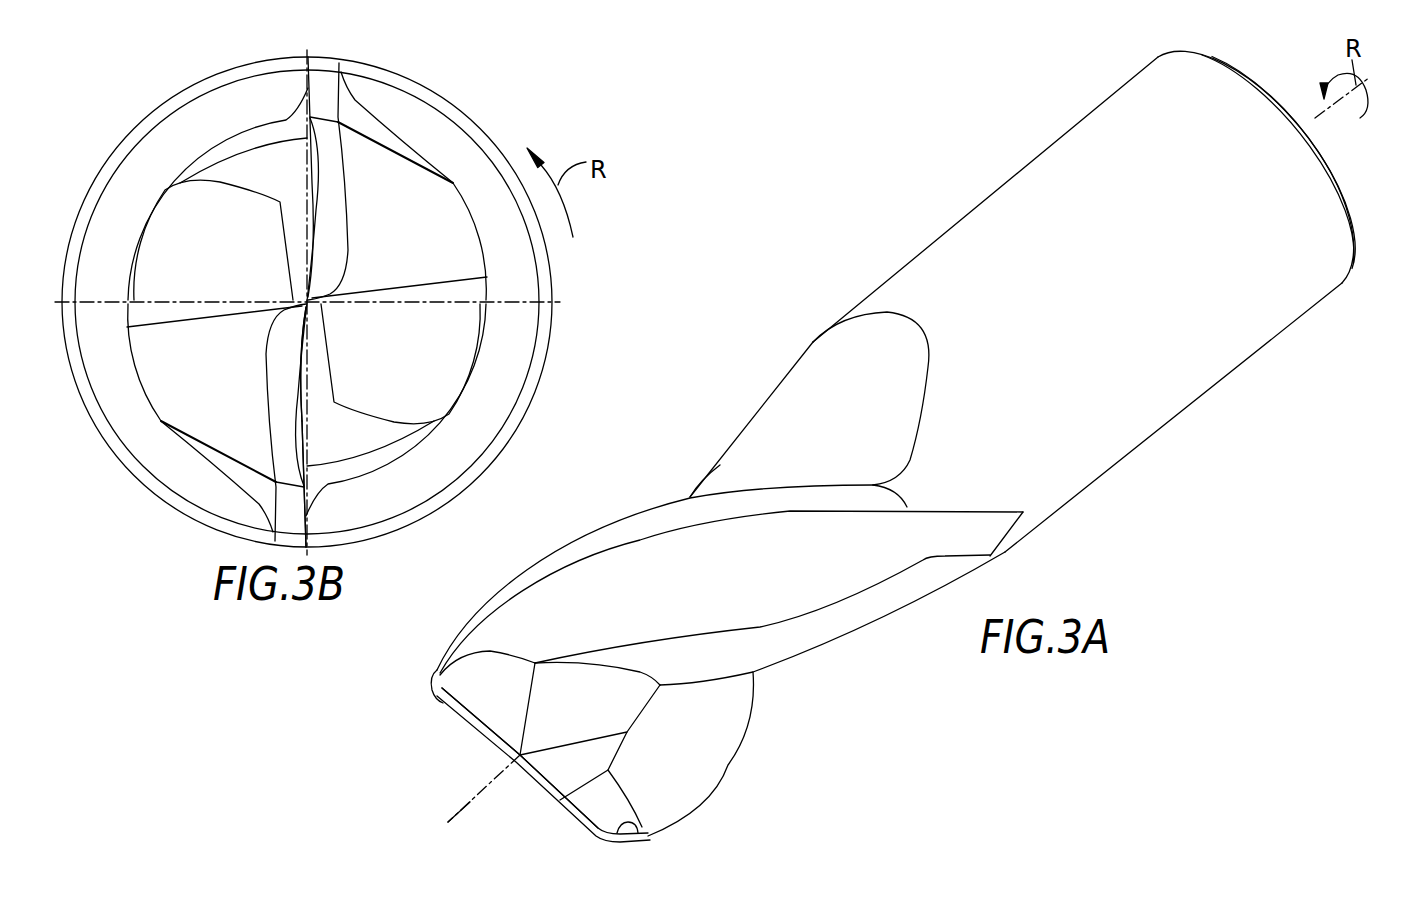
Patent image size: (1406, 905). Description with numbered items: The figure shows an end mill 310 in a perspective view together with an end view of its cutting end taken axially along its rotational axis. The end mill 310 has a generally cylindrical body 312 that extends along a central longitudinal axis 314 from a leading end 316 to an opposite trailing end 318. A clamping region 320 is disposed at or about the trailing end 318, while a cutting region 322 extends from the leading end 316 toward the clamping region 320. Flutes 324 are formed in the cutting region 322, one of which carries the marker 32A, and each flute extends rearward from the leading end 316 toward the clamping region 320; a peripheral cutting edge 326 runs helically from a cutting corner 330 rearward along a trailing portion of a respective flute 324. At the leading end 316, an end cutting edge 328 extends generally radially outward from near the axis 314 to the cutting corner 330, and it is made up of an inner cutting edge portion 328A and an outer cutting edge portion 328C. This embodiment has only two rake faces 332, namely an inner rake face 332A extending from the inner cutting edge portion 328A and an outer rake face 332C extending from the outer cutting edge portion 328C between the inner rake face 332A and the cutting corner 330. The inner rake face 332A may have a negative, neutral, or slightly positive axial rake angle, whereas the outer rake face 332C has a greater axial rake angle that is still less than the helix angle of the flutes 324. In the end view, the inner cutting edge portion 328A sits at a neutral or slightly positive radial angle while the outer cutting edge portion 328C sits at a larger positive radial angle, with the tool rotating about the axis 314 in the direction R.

In FIG. 3B, the end mill 310 is at (113, 89).
In FIG. 3A, the end mill 310 is at (862, 452).
In FIG. 3A, the body 312 is at (1084, 281).
In FIG. 3B, the central longitudinal axis 314 is at (292, 296).
In FIG. 3A, the central longitudinal axis 314 is at (492, 773).
In FIG. 3A, the leading end 316 is at (462, 833).
In FIG. 3A, the trailing end 318 is at (1278, 54).
In FIG. 3A, the clamping region 320 is at (696, 492).
In FIG. 3A, the flute 32A is at (678, 458).
In FIG. 3A, the cutting region 322 is at (656, 739).
In FIG. 3A, the flutes 324 is at (819, 677).
In FIG. 3A, the peripheral cutting edge 326 is at (608, 523).
In FIG. 3B, the end cutting edge 328 is at (316, 284).
In FIG. 3A, the end cutting edge 328 is at (527, 791).
In FIG. 3B, the inner cutting edge portion 328A is at (318, 355).
In FIG. 3A, the inner cutting edge portion 328A is at (537, 782).
In FIG. 3B, the outer cutting edge portion 328C is at (327, 512).
In FIG. 3A, the outer cutting edge portion 328C is at (559, 810).
In FIG. 3A, the cutting corner 330 is at (435, 678).
In FIG. 3A, the rake faces 332 is at (629, 756).
In FIG. 3A, the inner rake face 332A is at (598, 752).
In FIG. 3A, the outer rake face 332C is at (610, 792).